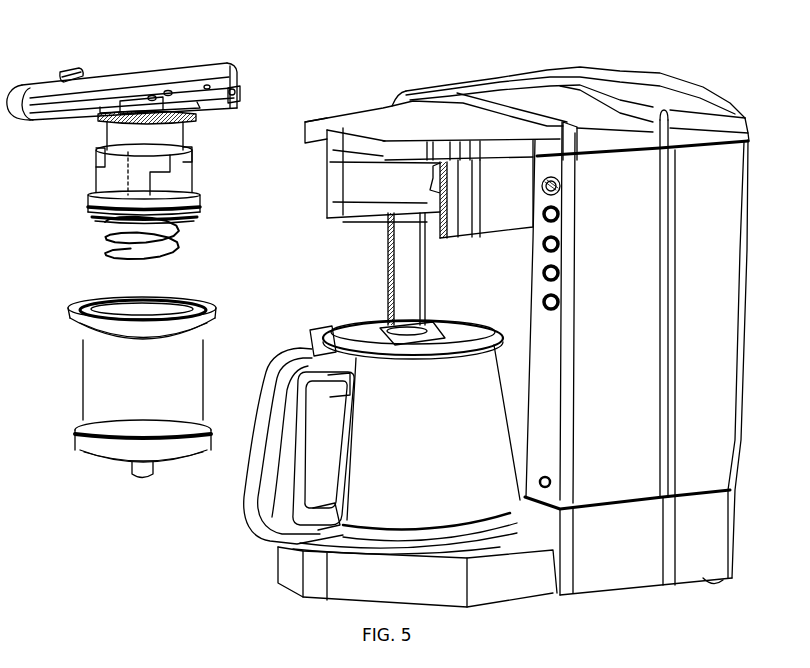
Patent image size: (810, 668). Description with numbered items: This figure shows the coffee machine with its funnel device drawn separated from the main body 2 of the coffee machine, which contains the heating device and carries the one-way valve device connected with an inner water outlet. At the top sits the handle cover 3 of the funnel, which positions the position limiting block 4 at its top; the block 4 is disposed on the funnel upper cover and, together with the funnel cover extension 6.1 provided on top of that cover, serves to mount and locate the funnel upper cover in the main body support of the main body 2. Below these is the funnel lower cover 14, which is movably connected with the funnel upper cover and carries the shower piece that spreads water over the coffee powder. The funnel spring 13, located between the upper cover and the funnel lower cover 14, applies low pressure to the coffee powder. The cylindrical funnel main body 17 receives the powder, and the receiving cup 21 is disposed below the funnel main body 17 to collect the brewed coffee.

The main body of coffee machine 2 is at (598, 350).
The handle cover of funnel 3 is at (200, 62).
The position limiting block 4 is at (110, 71).
The funnel cover extension 6.1 is at (234, 92).
The funnel spring 13 is at (178, 252).
The funnel lower cover 14 is at (193, 193).
The funnel main body 17 is at (217, 307).
The receiving cup 21 is at (472, 332).